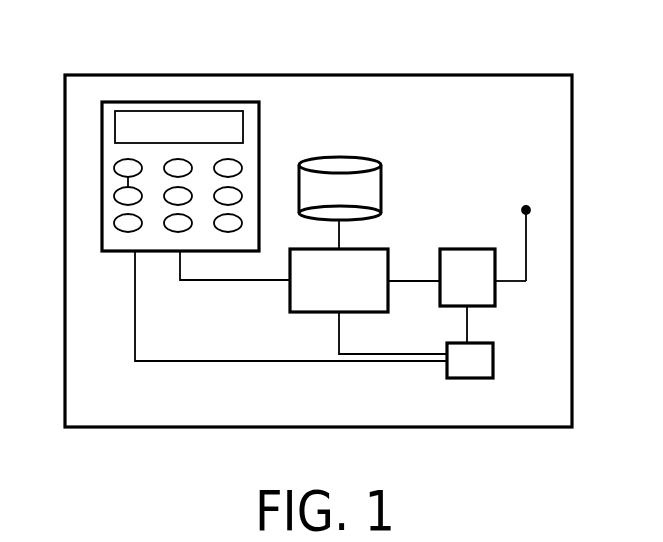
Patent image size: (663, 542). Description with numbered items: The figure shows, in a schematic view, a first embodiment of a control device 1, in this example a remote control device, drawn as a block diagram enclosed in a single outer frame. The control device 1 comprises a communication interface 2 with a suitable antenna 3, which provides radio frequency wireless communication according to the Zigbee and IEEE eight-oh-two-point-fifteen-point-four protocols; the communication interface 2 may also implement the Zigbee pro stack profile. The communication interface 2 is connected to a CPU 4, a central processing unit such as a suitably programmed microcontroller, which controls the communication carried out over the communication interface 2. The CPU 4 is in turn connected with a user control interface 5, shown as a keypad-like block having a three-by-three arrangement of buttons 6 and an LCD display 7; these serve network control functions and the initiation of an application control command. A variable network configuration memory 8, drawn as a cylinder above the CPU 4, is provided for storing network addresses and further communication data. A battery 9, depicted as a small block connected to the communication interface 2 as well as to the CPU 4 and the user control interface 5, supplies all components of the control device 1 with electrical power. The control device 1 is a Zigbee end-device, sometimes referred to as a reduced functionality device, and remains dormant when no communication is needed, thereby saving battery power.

The control device 1 is at (487, 75).
The communication interface 2 is at (467, 256).
The antenna 3 is at (526, 237).
The CPU 4 is at (297, 295).
The user control interface 5 is at (259, 128).
The buttons 6 is at (115, 168).
The LCD display 7 is at (211, 117).
The variable network configuration memory 8 is at (377, 189).
The battery 9 is at (488, 356).